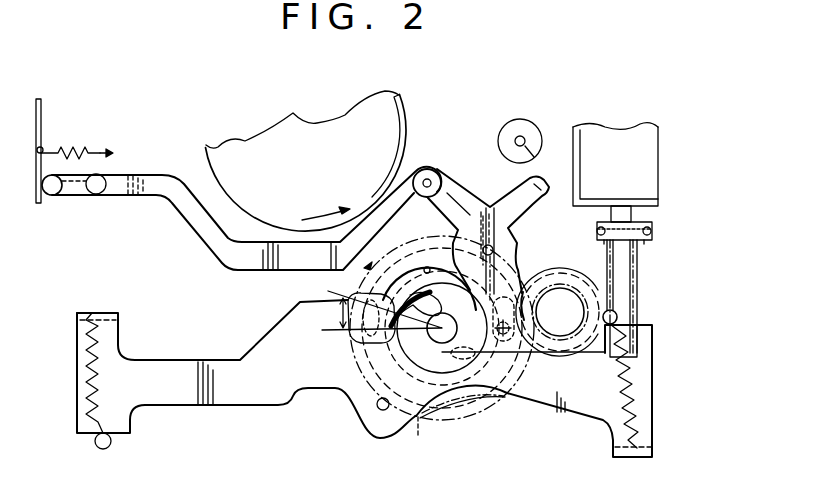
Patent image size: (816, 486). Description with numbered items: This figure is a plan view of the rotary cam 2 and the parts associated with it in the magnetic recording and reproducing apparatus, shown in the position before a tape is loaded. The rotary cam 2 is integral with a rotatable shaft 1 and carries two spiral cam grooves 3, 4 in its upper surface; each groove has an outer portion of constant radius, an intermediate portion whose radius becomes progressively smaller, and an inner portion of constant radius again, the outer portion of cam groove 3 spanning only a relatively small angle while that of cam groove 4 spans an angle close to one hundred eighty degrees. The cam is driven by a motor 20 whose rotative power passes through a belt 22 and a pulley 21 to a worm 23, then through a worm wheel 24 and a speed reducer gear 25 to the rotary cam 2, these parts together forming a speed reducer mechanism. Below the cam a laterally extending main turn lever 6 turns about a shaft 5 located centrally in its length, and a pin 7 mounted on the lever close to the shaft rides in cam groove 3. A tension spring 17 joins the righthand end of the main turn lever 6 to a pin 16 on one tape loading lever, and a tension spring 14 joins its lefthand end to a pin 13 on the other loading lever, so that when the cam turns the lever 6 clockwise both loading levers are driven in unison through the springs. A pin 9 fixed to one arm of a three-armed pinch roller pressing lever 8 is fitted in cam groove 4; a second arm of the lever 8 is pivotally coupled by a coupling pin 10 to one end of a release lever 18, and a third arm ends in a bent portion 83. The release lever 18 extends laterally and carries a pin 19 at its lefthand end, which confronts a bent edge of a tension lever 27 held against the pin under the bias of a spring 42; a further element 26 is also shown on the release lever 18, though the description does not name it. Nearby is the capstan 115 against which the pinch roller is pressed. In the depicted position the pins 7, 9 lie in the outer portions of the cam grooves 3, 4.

The rotatable shaft 1 is at (440, 332).
The rotary cam 2 is at (452, 416).
The cam groove 3 is at (427, 267).
The cam groove 4 is at (424, 436).
The shaft 5 is at (377, 405).
The main turn lever 6 is at (238, 396).
The pin 7 is at (352, 338).
The pinch roller pressing lever 8 is at (447, 193).
The pin 9 is at (510, 378).
The coupling pin 10 is at (430, 170).
The pin 13 is at (111, 441).
The tension spring 14 is at (92, 376).
The pin 16 is at (618, 317).
The tension spring 17 is at (643, 387).
The release lever 18 is at (152, 172).
The pin 19 is at (52, 196).
The motor 20 is at (655, 148).
The pulley 21 is at (620, 241).
The belt 22 is at (652, 228).
The worm 23 is at (640, 293).
The worm wheel 24 is at (555, 370).
The speed reducer gear 25 is at (558, 288).
The ring 26 is at (97, 194).
The tension lever 27 is at (42, 118).
The spring 42 is at (83, 149).
The bent portion 83 is at (551, 192).
The capstan 115 is at (508, 140).